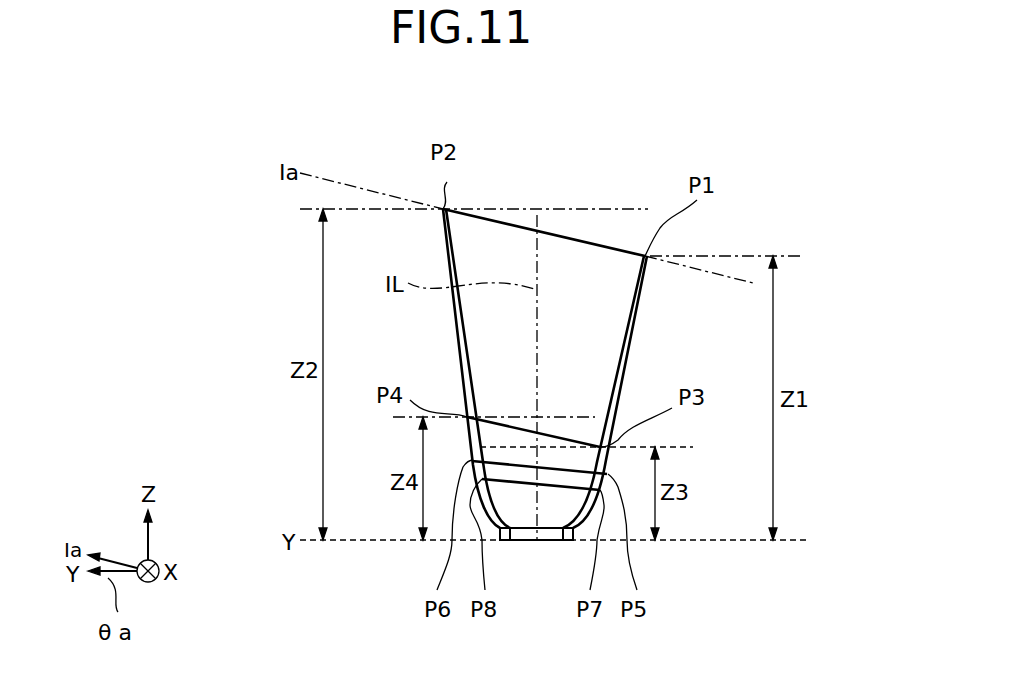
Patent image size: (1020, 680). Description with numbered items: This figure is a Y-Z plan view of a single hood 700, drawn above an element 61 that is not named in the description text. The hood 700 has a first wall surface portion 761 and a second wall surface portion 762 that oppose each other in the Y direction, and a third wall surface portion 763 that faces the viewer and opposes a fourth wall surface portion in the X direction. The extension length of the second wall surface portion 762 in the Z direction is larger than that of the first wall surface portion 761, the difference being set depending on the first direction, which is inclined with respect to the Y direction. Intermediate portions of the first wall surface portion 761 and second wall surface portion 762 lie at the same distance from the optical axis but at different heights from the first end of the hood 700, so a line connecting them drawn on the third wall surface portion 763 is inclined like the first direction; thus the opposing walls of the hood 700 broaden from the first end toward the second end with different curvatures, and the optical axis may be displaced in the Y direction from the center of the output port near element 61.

The hood 700 is at (660, 122).
The third wall surface portion 763 is at (560, 258).
The second wall surface portion 762 is at (457, 318).
The first wall surface portion 761 is at (631, 357).
The light source 61 is at (533, 563).